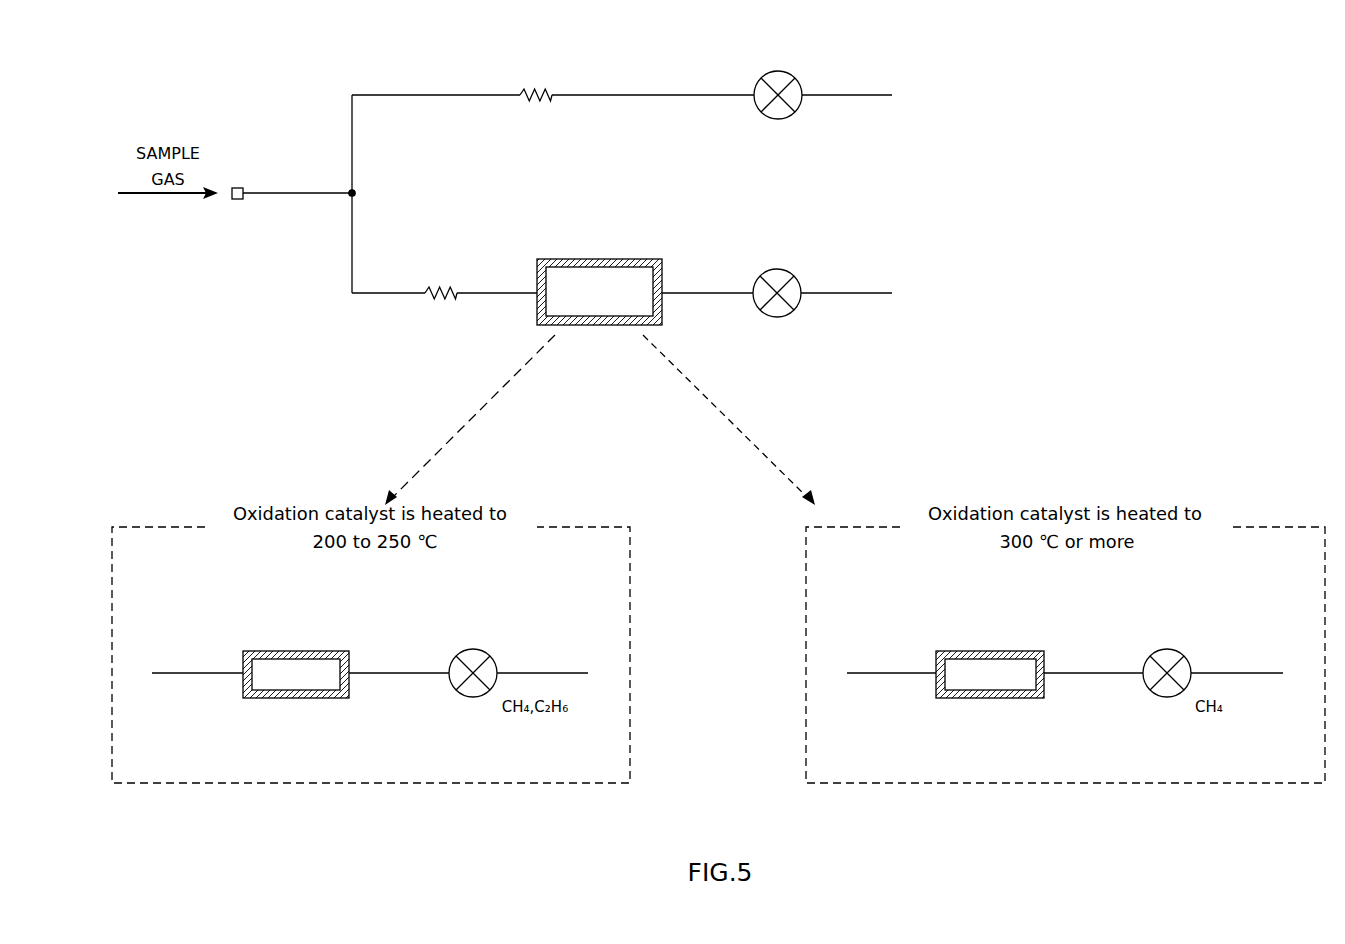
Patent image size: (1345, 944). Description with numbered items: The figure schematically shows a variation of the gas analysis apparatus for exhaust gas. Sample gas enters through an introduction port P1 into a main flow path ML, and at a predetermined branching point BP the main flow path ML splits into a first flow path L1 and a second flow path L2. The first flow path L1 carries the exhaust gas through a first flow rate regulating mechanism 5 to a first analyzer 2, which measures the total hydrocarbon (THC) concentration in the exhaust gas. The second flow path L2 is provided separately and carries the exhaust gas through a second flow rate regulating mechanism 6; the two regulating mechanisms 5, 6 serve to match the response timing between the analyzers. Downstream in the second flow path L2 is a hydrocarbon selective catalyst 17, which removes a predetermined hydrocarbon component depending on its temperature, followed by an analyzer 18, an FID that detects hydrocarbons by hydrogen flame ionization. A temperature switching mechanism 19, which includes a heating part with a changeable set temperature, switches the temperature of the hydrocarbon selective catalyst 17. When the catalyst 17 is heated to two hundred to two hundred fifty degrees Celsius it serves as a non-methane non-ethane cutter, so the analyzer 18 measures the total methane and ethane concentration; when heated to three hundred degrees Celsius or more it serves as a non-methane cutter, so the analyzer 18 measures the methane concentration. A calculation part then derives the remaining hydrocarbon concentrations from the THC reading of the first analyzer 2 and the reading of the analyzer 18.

The first analyzer 2 is at (776, 70).
The first flow rate regulating mechanism 5 is at (533, 87).
The second flow rate regulating mechanism 6 is at (439, 285).
The hydrocarbon selective catalyst 17 is at (620, 259).
The analyzer 18 is at (776, 268).
The temperature switching mechanism 19 is at (577, 259).
The first flow path L1 is at (672, 92).
The second flow path L2 is at (720, 291).
The main flow path ML is at (291, 189).
The branching point BP is at (349, 198).
The introduction port P1 is at (238, 203).